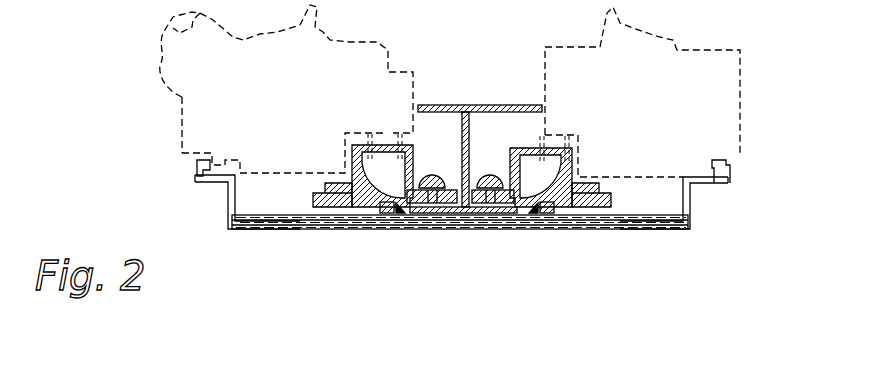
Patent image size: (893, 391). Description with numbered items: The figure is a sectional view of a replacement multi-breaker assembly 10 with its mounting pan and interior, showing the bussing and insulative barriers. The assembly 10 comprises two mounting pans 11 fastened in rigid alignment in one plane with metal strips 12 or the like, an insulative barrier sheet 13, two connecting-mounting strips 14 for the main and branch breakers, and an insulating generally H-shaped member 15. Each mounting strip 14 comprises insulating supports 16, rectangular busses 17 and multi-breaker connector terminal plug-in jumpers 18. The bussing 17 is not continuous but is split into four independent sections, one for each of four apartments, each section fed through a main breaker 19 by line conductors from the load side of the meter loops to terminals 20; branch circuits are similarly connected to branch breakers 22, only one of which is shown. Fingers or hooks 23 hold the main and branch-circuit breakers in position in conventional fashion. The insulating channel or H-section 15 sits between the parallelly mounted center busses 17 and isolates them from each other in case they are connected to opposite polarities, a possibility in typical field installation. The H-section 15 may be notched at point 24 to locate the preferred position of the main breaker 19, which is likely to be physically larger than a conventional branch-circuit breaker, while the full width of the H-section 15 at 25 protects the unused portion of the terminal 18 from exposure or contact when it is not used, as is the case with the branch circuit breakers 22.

The multi-breaker assembly 10 is at (748, 154).
The mounting pan 11 is at (228, 200).
The metal strip 12 is at (367, 229).
The insulative barrier sheet 13 is at (640, 220).
The connecting-mounting strip 14 is at (305, 206).
The insulating H-shaped member 15 is at (484, 106).
The insulating support 16 is at (355, 227).
The rectangular bus 17 is at (307, 200).
The multi-breaker connector terminal plug-in jumper 18 is at (383, 143).
The main breaker 19 is at (182, 100).
The terminal 20 is at (165, 20).
The branch circuit breaker 22 is at (745, 72).
The finger or hook 23 is at (197, 170).
The notch point 24 is at (417, 107).
The full-width portion of H-section 25 is at (538, 108).